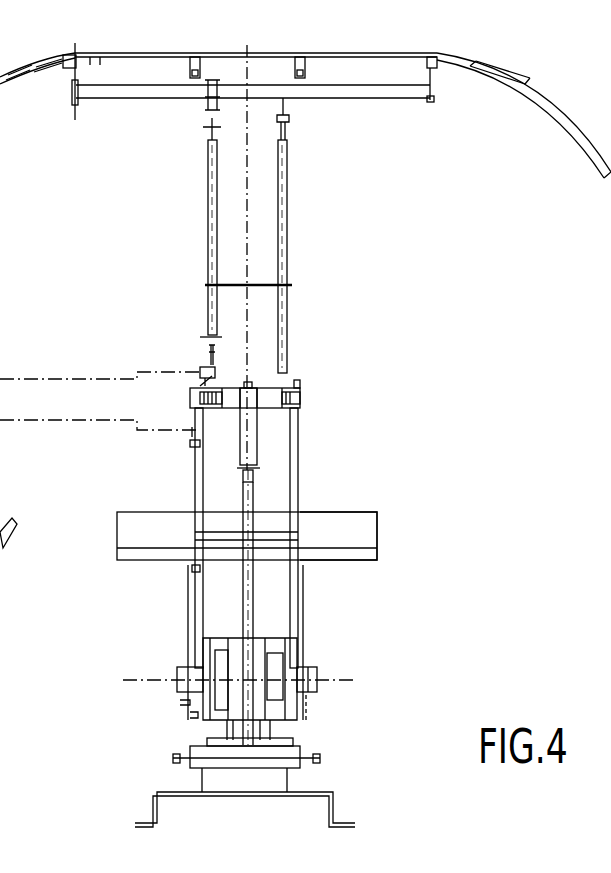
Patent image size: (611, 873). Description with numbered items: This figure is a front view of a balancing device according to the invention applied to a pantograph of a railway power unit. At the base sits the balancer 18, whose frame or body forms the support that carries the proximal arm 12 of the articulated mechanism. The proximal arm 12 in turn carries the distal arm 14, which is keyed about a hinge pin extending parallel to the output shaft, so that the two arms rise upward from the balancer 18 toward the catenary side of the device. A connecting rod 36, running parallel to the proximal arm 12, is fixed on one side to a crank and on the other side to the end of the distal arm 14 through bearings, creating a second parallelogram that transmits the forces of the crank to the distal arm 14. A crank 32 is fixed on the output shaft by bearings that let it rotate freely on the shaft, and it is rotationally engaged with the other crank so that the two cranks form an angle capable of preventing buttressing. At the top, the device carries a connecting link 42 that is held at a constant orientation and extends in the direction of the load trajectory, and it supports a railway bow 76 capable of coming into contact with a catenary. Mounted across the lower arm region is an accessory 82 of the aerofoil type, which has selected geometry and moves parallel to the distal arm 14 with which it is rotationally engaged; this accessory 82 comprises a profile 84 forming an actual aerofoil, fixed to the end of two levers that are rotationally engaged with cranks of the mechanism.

The railway bow 76 is at (245, 62).
The connecting link 42 is at (363, 88).
The distal arm 14 is at (207, 240).
The proximal arm 12 is at (193, 569).
The profile 84 is at (345, 532).
The accessory 82 is at (389, 523).
The connecting rod 36 is at (256, 578).
The balancer 18 is at (265, 668).
The crank 32 is at (180, 724).